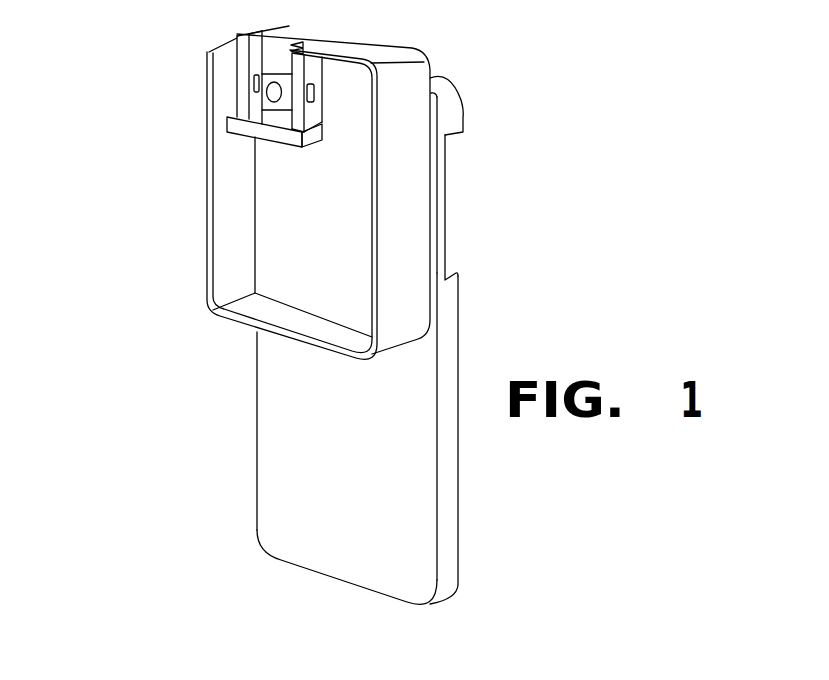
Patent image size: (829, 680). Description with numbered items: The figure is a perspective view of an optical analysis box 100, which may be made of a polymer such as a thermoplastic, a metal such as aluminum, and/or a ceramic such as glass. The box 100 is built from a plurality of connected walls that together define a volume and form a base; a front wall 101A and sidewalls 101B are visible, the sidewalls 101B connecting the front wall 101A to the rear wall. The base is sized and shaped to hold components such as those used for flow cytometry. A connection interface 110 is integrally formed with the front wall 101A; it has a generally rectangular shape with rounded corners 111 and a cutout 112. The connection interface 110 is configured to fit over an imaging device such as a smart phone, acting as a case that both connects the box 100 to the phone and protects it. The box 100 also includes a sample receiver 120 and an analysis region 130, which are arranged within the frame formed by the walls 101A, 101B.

The optical analysis box 100 is at (188, 371).
The front wall 101A is at (342, 242).
The sidewall 101B is at (423, 108).
The connection interface 110 is at (477, 549).
The rounded corners 111 is at (443, 587).
The cutout 112 is at (443, 250).
The sample receiver 120 is at (238, 154).
The analysis region 130 is at (249, 60).